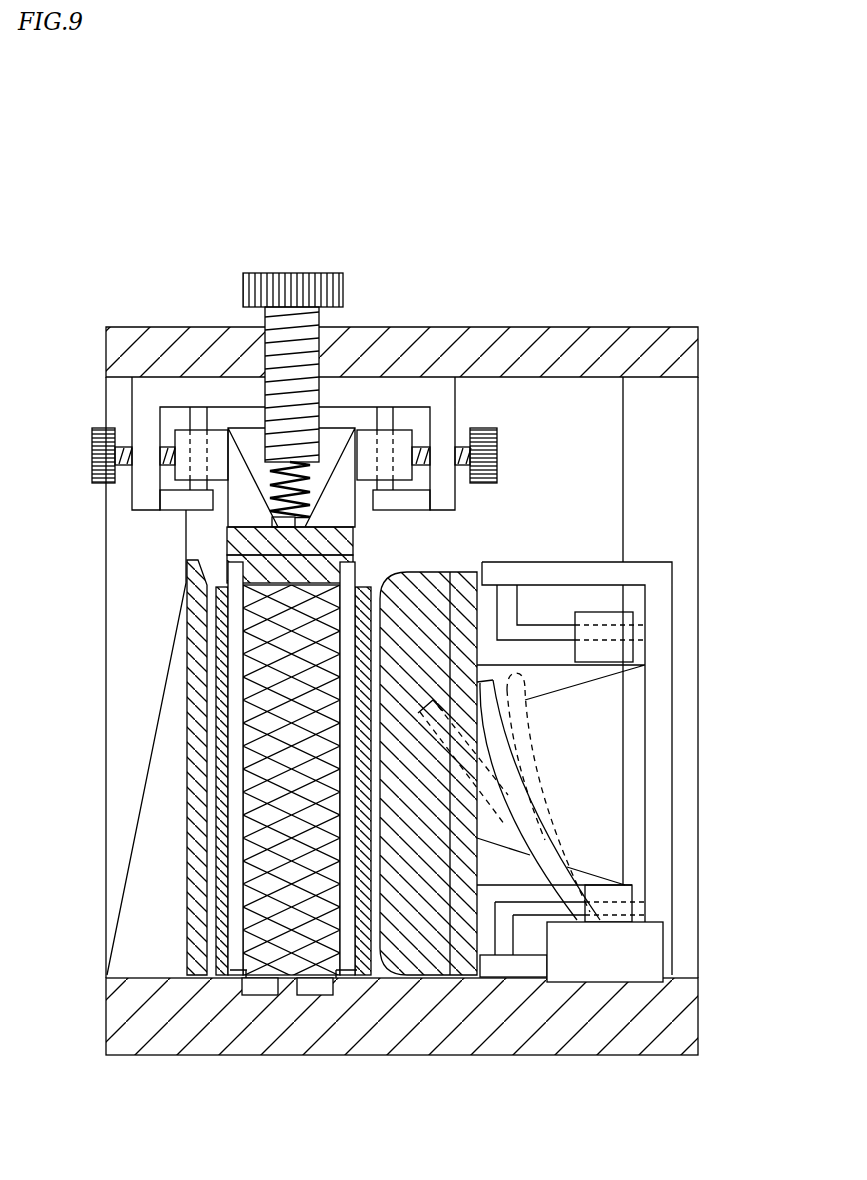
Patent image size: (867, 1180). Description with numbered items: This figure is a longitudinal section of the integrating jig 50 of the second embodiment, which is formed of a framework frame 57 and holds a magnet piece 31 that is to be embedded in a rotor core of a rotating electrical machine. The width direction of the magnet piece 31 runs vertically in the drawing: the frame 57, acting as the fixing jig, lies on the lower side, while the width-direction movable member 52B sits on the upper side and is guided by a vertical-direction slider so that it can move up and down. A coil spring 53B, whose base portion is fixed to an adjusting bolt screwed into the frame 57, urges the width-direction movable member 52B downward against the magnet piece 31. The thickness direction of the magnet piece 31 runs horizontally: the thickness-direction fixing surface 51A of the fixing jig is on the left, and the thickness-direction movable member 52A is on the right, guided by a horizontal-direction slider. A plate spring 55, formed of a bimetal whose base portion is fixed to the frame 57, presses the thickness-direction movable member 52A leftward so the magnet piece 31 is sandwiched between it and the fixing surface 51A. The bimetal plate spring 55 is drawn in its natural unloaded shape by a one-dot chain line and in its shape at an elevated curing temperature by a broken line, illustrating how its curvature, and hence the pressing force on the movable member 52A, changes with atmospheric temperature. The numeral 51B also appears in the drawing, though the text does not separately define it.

The integrating jig 50 is at (571, 318).
The frame 57 is at (645, 330).
The coil spring 53B is at (317, 475).
The width-direction movable member 52B is at (240, 540).
The thickness-direction movable member 52A is at (407, 960).
The thickness-direction fixing surface 51A is at (205, 785).
The inner coil 51B is at (287, 967).
The magnet piece 31 is at (260, 962).
The plate spring 55 is at (560, 817).